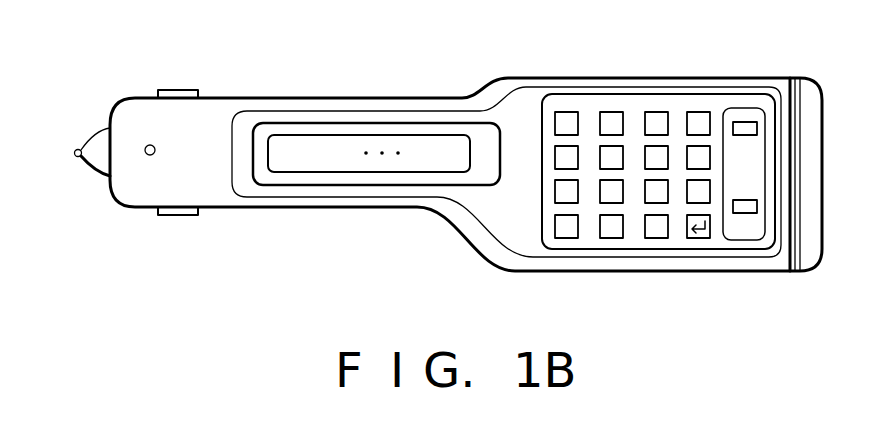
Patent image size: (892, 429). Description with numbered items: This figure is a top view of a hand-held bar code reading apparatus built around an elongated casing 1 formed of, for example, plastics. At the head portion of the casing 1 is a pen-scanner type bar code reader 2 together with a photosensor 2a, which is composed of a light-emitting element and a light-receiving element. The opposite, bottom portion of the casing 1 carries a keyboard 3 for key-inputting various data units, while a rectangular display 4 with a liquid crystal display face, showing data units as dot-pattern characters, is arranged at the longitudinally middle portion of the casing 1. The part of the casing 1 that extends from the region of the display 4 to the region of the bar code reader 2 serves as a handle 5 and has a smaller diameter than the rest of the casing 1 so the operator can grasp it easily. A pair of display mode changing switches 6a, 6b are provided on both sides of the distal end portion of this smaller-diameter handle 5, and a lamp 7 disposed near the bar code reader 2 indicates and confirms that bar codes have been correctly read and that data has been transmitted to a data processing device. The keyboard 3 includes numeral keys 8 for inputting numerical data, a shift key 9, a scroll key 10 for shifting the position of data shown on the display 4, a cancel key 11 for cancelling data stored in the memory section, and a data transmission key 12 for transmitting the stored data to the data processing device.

The casing 1 is at (822, 122).
The bar code reader 2 is at (100, 130).
The photosensor 2a is at (77, 160).
The keyboard 3 is at (607, 94).
The display 4 is at (427, 160).
The handle 5 is at (436, 98).
The display mode changing switch 6a is at (178, 216).
The display mode changing switch 6b is at (188, 90).
The lamp 7 is at (148, 156).
The numeral keys 8 is at (637, 115).
The shift key 9 is at (653, 239).
The scroll key 10 is at (700, 239).
The cancel key 11 is at (748, 120).
The data transmission key 12 is at (757, 204).